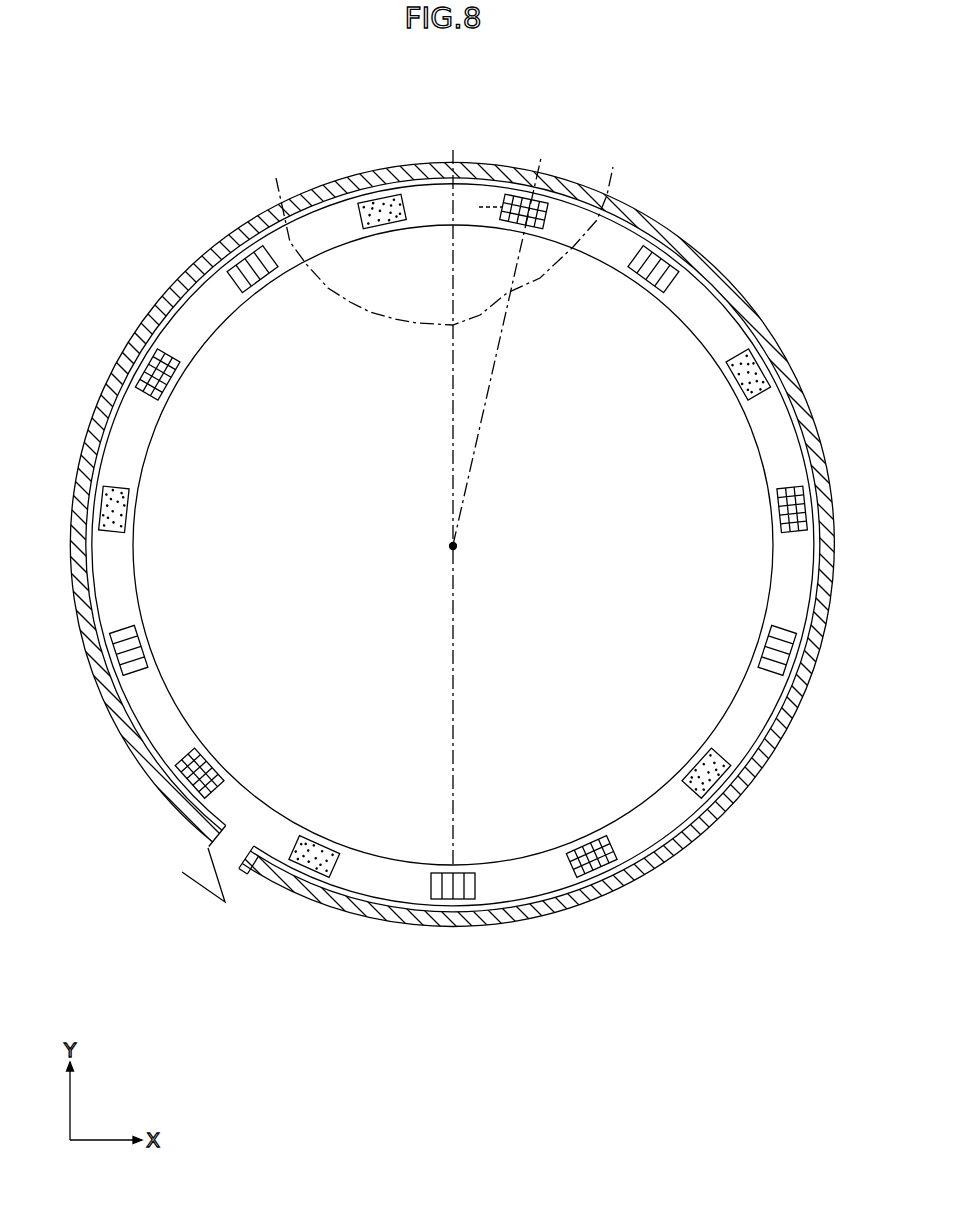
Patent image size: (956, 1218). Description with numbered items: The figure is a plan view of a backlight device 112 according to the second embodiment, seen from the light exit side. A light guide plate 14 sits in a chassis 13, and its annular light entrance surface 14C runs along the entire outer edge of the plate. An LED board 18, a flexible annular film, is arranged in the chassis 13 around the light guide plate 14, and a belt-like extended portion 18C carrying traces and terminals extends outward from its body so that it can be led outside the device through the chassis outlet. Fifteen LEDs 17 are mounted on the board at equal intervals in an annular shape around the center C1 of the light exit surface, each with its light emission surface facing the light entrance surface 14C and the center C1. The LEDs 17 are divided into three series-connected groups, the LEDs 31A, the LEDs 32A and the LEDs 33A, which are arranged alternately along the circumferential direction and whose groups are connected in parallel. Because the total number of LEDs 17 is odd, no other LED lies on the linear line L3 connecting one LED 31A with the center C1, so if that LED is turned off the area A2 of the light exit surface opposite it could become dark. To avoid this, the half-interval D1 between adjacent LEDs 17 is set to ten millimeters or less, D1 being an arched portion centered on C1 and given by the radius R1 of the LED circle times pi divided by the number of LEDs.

The backlight device 112 is at (312, 160).
The chassis 13 is at (237, 243).
The light guide plate 14 is at (668, 808).
The light entrance surface 14C is at (533, 863).
The LED 17 is at (175, 750).
The LED board 18 is at (367, 885).
The extended portion 18C is at (205, 857).
The LED of first LED group (first light source) 31A is at (762, 380).
The LED of second LED group (second light source) 32A is at (380, 207).
The LED of third LED group (third light source) 33A is at (533, 207).
The area A2 is at (430, 247).
The center C1 is at (458, 546).
The half-interval portion D1 is at (453, 207).
The linear line L3 is at (432, 235).
The distance (radius) R1 is at (597, 220).